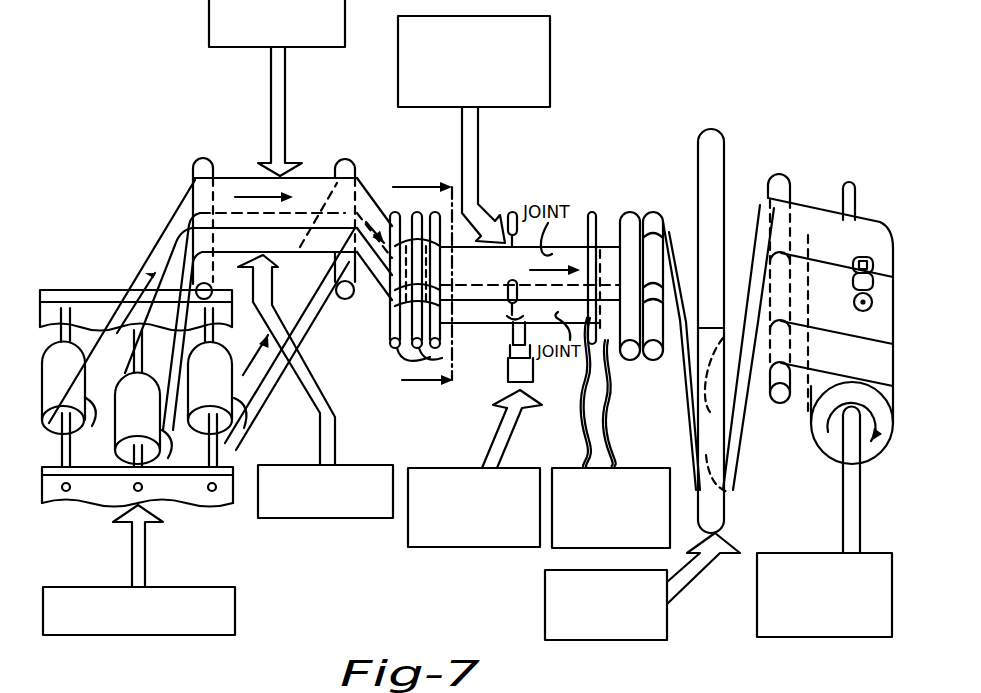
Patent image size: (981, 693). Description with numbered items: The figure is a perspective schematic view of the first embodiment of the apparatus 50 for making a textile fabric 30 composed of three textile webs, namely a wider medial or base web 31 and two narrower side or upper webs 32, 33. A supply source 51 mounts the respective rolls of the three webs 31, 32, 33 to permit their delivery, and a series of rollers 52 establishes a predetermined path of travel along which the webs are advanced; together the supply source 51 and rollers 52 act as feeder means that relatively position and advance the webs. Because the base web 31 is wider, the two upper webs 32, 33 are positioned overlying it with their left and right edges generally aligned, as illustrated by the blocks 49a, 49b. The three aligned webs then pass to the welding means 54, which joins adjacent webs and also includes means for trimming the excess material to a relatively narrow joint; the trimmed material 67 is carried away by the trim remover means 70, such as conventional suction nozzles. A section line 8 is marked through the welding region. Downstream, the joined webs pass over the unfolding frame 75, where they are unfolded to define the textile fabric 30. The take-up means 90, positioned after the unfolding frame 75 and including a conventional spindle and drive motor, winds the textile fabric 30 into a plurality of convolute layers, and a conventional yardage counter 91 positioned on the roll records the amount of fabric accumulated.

The section line 8- 8 is at (423, 287).
The textile fabric 30 is at (835, 465).
The medial or base web 31 is at (842, 310).
The side or upper web 32 is at (868, 373).
The side or upper web 33 is at (857, 250).
The align left edges block 49a is at (260, 50).
The align right edges block 49b is at (342, 464).
The apparatus 50 is at (160, 150).
The supply source 51 is at (237, 598).
The rollers 52 is at (196, 165).
The welding means 54 is at (415, 106).
The trimmed material 67 is at (580, 440).
The trim remover means 70 is at (623, 468).
The unfolding frame 75 is at (545, 597).
The take-up means 90 is at (808, 552).
The yardage counter 91 is at (866, 254).